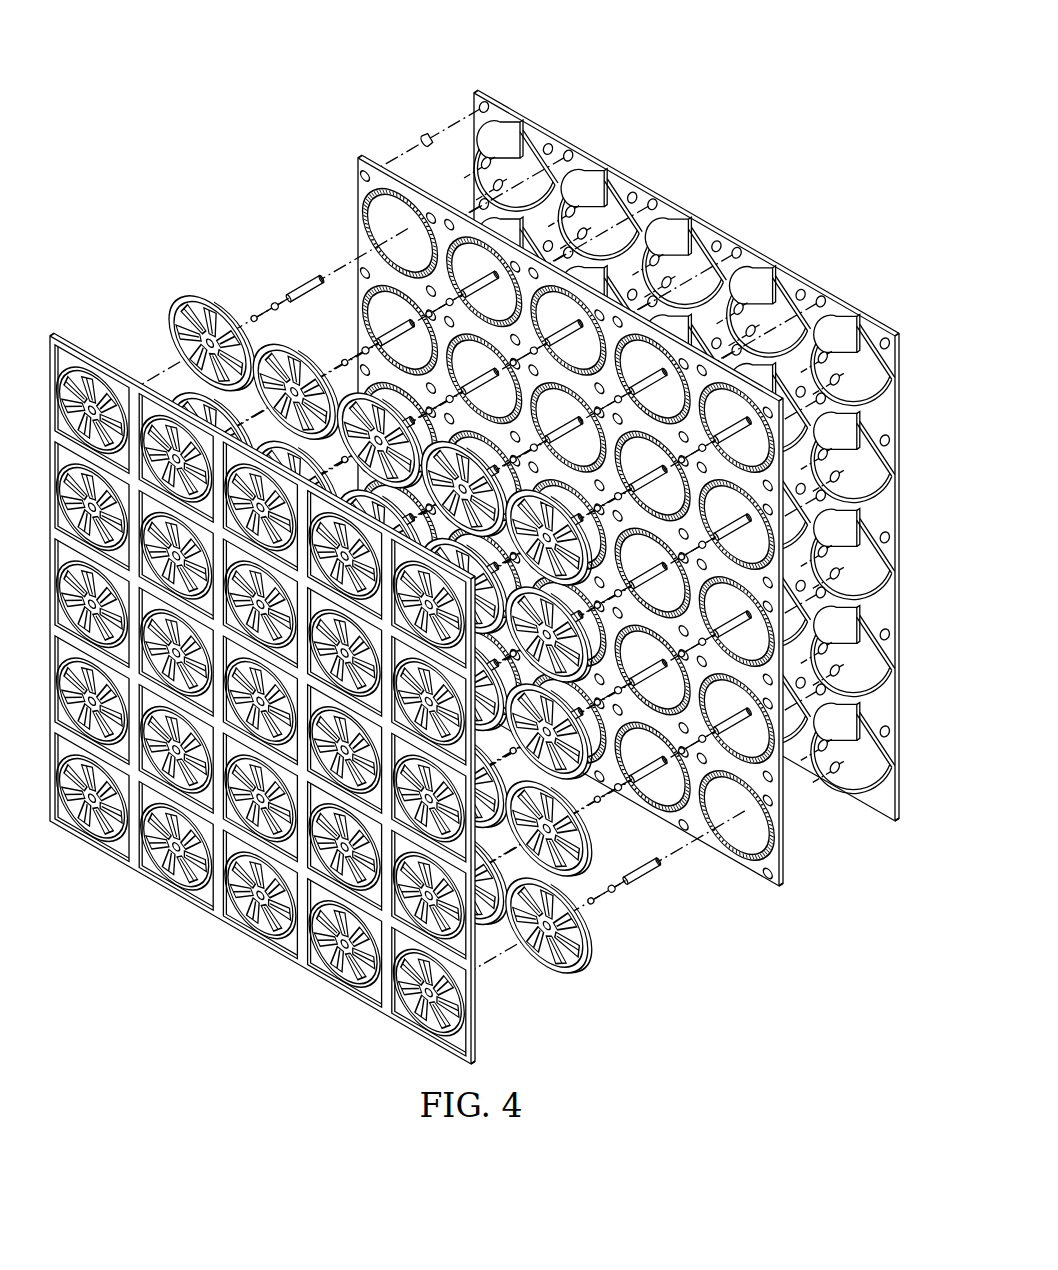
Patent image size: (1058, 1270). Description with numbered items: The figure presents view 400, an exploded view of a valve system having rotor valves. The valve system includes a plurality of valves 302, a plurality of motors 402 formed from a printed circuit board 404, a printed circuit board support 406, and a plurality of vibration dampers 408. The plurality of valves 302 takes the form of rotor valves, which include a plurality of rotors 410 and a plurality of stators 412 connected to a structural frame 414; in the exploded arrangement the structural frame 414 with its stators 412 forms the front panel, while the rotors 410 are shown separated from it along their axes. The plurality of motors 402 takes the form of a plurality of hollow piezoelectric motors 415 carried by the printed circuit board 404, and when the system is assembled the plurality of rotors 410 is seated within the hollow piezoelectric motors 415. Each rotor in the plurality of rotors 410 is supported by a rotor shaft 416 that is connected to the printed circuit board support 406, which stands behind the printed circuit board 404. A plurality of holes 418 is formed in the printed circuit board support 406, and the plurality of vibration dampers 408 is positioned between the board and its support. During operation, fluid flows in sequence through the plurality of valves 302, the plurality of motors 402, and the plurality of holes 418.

The view 400 is at (474, 539).
The plurality of valves 302 is at (262, 657).
The plurality of motors 402 is at (533, 543).
The printed circuit board 404 is at (356, 186).
The printed circuit board support 406 is at (681, 455).
The plurality of vibration dampers 408 is at (420, 136).
The plurality of rotors 410 is at (544, 962).
The plurality of stators 412 is at (345, 982).
The structural frame 414 is at (150, 882).
The plurality of hollow piezoelectric motors 415 is at (738, 880).
The rotor shaft 416 is at (306, 283).
The plurality of holes 418 is at (586, 156).